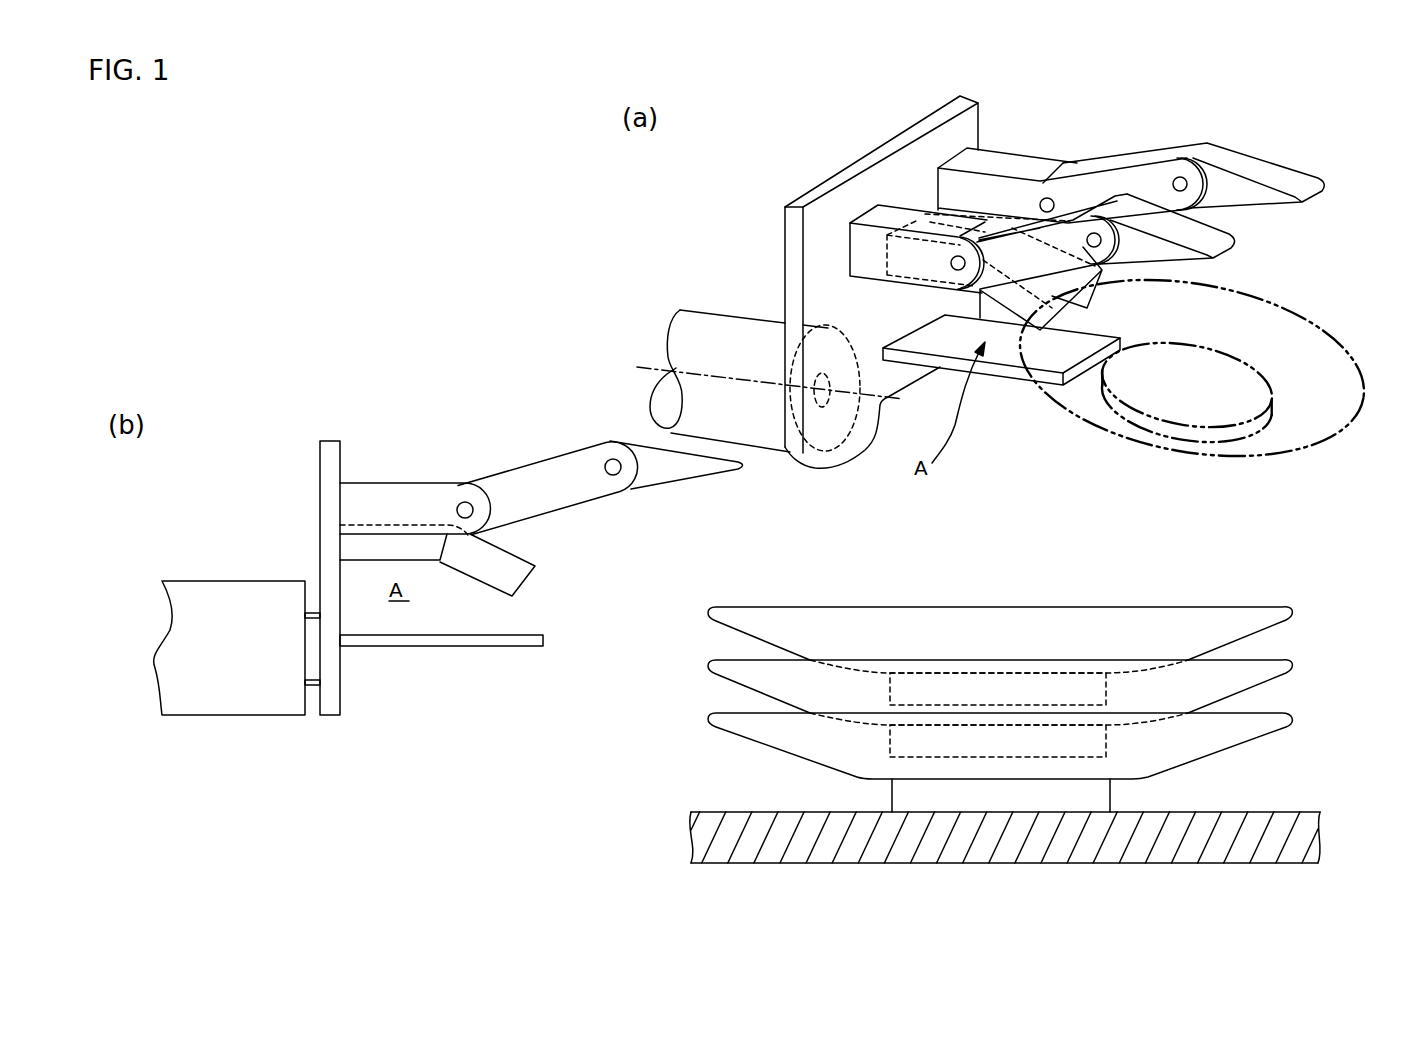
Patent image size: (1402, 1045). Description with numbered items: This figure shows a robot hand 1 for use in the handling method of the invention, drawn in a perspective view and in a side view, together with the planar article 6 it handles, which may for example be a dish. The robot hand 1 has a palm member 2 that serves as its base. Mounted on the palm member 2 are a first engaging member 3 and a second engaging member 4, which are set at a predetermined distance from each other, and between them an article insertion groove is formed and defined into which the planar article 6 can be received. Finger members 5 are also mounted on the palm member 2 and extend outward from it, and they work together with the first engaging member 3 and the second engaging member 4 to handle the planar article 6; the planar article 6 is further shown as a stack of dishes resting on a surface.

The robot hand 1 is at (301, 388).
The palm member 2 is at (320, 519).
The first engaging member 3 is at (452, 641).
The second engaging member 4 is at (404, 546).
The finger members 5 is at (525, 466).
The planar article 6 is at (1306, 318).